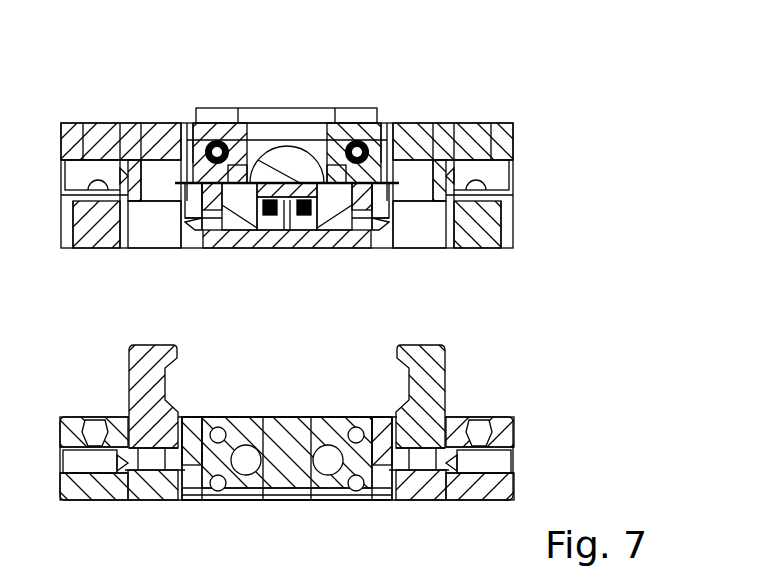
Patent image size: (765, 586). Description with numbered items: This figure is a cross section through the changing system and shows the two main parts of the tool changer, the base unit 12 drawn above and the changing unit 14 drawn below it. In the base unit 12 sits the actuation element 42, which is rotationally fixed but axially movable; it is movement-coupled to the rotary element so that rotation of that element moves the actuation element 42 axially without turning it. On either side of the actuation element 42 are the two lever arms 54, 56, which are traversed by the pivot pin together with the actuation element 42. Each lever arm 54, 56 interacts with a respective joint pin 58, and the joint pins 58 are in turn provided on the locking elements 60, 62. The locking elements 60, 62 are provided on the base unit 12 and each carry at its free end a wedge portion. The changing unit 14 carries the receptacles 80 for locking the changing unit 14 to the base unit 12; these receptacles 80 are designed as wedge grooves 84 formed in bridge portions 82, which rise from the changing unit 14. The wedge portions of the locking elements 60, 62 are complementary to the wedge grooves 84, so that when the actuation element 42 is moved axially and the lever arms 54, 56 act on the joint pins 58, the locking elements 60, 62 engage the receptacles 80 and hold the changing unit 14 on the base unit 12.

The base unit 12 is at (500, 148).
The changing unit 14 is at (500, 484).
The actuation element 42 is at (293, 148).
The lever arm 54 is at (398, 190).
The lever arm 56 is at (205, 185).
The joint pins 58 is at (237, 140).
The locking element 60 is at (386, 218).
The locking element 62 is at (200, 222).
The receptacles 80 is at (172, 387).
The wedge grooves 84 is at (410, 385).
The bridge portions 82 is at (142, 390).